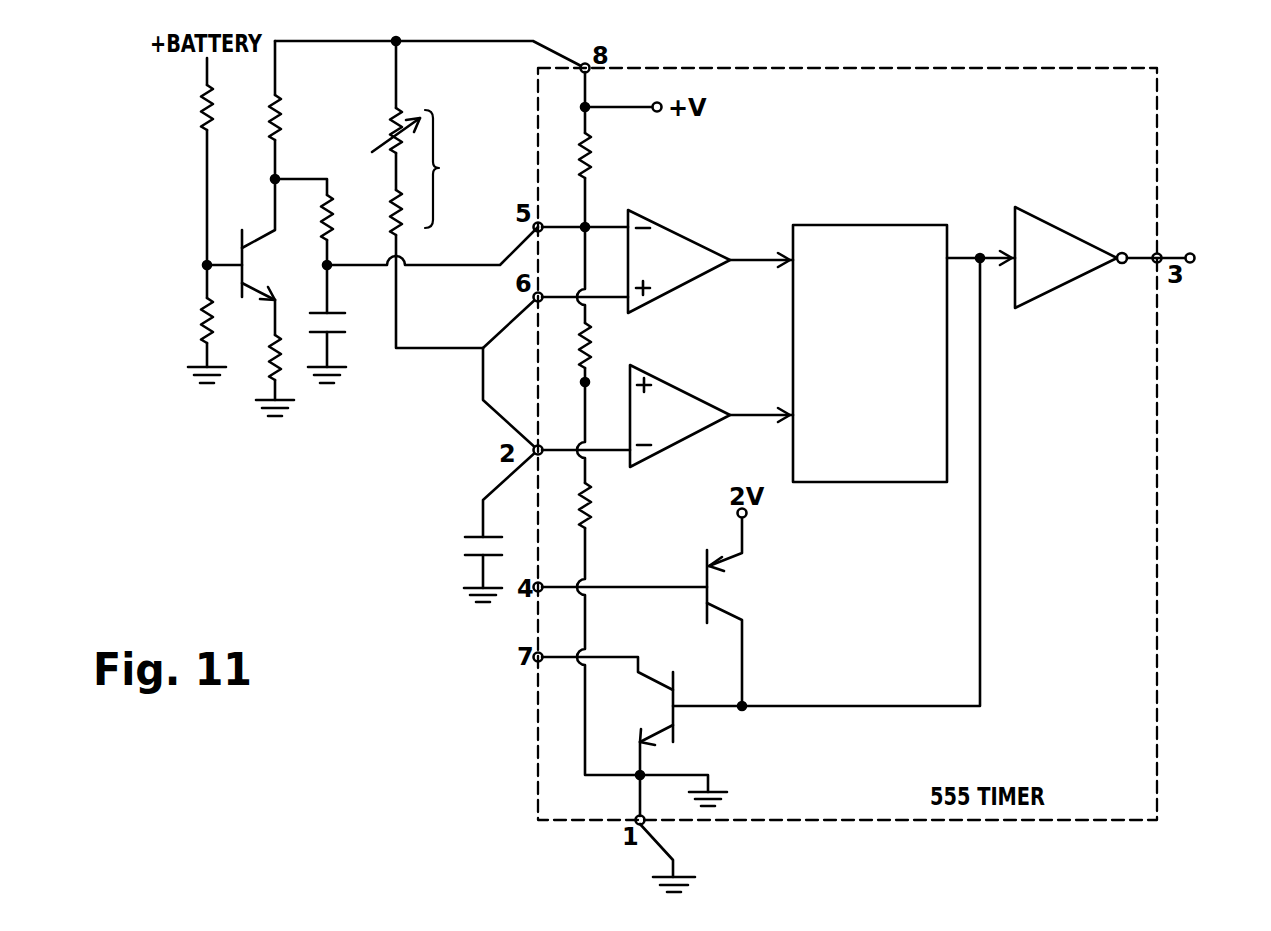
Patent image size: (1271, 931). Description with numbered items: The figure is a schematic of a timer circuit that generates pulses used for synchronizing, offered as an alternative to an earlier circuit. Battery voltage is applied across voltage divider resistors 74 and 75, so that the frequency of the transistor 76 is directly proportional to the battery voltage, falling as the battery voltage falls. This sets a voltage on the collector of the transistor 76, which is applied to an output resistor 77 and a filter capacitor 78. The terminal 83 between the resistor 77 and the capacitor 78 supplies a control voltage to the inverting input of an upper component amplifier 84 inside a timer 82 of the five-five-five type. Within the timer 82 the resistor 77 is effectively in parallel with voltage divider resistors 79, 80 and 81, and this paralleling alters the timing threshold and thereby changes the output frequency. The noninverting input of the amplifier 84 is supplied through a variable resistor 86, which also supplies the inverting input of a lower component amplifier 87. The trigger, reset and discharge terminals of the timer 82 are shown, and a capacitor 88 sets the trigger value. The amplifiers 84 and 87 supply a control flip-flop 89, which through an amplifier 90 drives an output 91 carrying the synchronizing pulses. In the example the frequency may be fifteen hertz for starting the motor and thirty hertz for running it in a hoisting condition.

The voltage divider resistor 74 is at (204, 104).
The voltage divider resistor 75 is at (200, 320).
The transistor 76 is at (242, 230).
The output resistor 77 is at (330, 218).
The filter capacitor 78 is at (340, 322).
The voltage divider resistor 79 is at (595, 150).
The voltage divider resistor 80 is at (595, 336).
The voltage divider resistor 81 is at (595, 498).
The 555 timer 82 is at (1037, 64).
The terminal 83 is at (330, 268).
The upper component amplifier 84 is at (670, 230).
The variable resistor 86 is at (423, 171).
The lower component amplifier 87 is at (668, 387).
The capacitor 88 is at (470, 553).
The control flip-flop 89 is at (850, 228).
The amplifier 90 is at (1040, 222).
The output 91 is at (1190, 250).